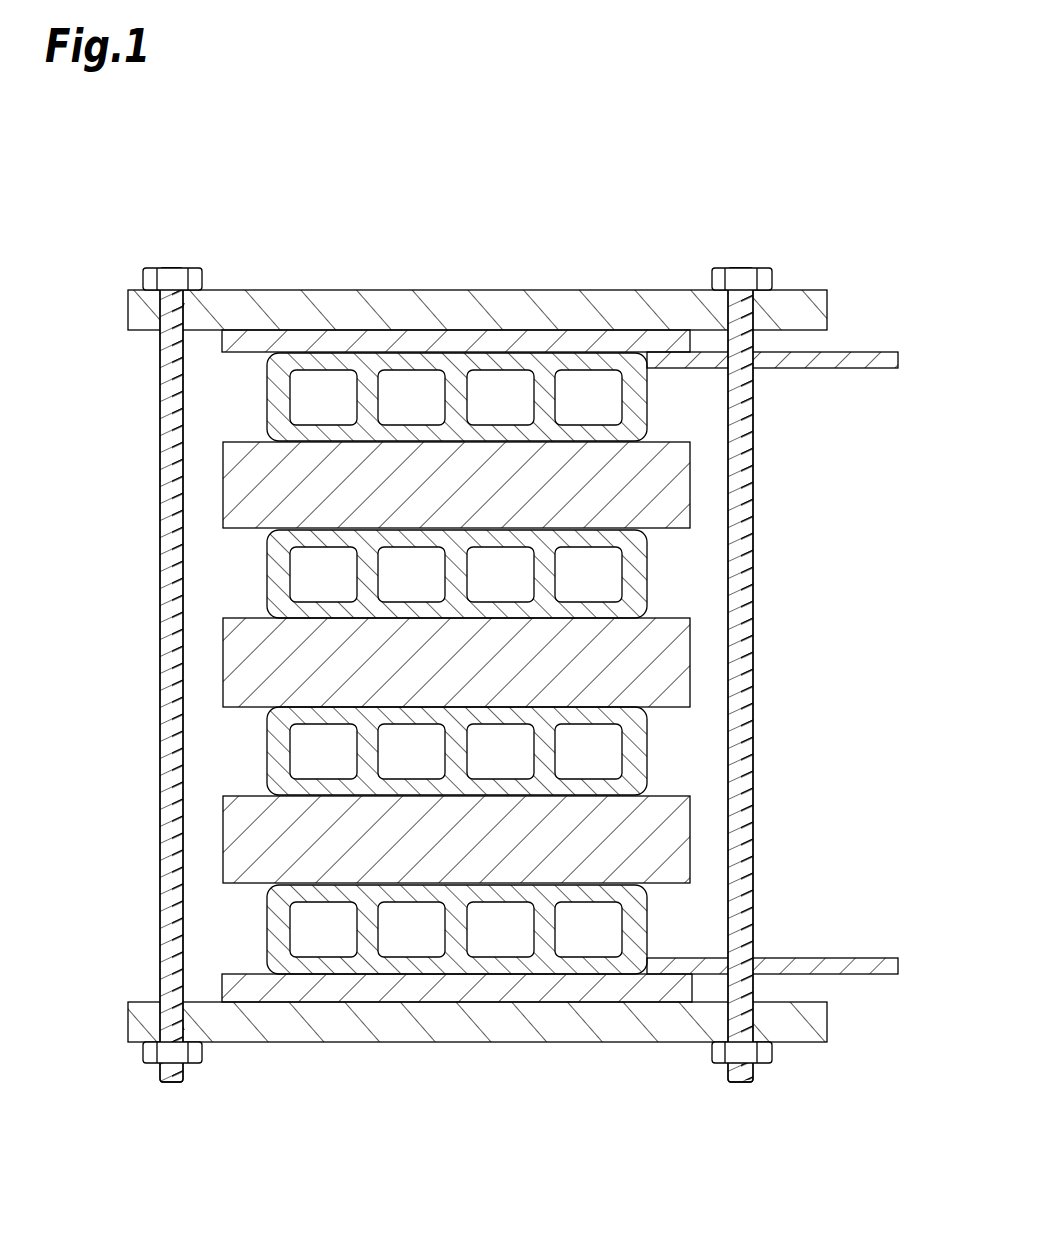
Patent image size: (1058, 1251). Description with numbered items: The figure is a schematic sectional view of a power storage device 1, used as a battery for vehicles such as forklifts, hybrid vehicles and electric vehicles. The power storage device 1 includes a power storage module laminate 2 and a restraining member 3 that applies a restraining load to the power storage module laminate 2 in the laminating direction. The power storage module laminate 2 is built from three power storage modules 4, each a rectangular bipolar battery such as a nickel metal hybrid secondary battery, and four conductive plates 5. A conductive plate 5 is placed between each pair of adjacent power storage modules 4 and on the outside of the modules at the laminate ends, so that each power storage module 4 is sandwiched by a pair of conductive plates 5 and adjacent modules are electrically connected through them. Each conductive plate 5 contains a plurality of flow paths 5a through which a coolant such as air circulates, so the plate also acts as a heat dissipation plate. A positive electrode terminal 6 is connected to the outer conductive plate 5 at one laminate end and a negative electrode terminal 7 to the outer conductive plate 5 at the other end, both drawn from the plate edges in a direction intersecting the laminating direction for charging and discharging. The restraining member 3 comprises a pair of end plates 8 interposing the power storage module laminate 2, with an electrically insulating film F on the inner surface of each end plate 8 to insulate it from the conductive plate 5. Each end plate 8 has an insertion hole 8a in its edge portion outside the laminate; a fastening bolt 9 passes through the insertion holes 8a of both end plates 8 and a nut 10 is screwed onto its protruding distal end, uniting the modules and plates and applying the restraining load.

The power storage device 1 is at (152, 198).
The power storage module laminate 2 is at (206, 598).
The restraining member 3 is at (822, 273).
The power storage module 4 is at (690, 485).
The conductive plate 5 is at (502, 663).
The flow path 5a is at (298, 403).
The positive electrode terminal 6 is at (869, 958).
The negative electrode terminal 7 is at (866, 368).
The end plate 8 is at (481, 297).
The insertion hole 8a is at (172, 302).
The fastening bolt 9 is at (160, 640).
The nut 10 is at (151, 1064).
The electrically insulating film F is at (232, 341).